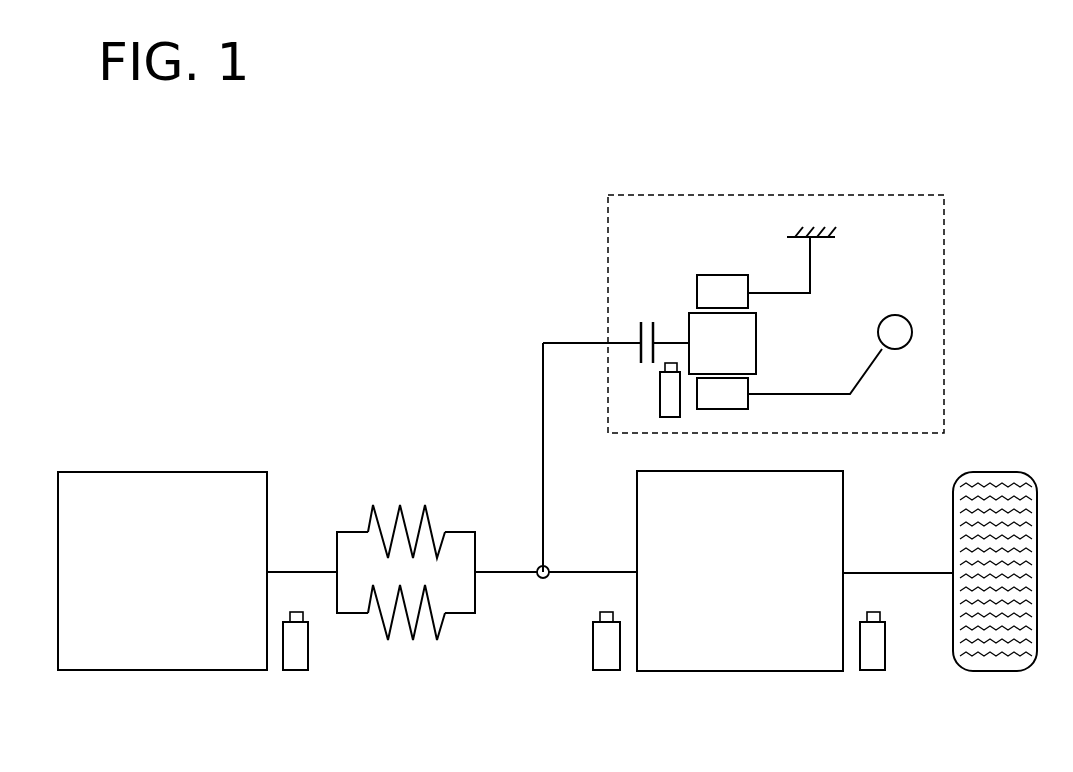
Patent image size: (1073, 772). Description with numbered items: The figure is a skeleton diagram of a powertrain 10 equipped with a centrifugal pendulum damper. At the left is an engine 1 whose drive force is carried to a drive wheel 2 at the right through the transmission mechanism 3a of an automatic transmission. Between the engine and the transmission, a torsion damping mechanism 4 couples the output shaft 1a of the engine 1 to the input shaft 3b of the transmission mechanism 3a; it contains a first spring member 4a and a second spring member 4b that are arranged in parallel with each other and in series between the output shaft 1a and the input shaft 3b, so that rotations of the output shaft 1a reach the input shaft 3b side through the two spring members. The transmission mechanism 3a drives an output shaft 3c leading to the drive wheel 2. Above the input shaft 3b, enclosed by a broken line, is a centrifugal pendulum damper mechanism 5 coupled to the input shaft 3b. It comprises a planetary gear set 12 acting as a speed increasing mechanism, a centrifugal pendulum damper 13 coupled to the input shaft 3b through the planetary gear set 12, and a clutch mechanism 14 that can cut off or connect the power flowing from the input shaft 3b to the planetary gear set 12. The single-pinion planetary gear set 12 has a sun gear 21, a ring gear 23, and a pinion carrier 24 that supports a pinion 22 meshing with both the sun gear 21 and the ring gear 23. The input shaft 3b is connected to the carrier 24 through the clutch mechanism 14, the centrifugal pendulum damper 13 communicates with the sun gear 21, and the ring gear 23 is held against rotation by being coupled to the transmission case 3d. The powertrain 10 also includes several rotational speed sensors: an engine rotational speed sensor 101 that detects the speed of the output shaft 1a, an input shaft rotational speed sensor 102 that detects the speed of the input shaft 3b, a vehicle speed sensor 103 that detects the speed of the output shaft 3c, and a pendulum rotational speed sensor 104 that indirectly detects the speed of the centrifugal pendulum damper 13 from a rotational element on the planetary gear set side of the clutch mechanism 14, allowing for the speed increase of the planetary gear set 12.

The engine 1 is at (217, 471).
The output shaft 1a is at (296, 570).
The drive wheel 2 is at (1016, 472).
The transmission mechanism 3a is at (845, 472).
The input shaft 3b is at (590, 571).
The output shaft 3c is at (896, 572).
The transmission case 3d is at (822, 232).
The torsion damping mechanism 4 is at (437, 573).
The first spring member 4a is at (373, 505).
The second spring member 4b is at (387, 644).
The centrifugal pendulum damper mechanism 5 is at (905, 194).
The powertrain 10 is at (285, 305).
The planetary gear set 12 is at (747, 314).
The centrifugal pendulum damper 13 is at (869, 366).
The clutch mechanism 14 is at (643, 322).
The sun gear 21 is at (749, 406).
The pinion 22 is at (757, 341).
The ring gear 23 is at (748, 292).
The pinion carrier 24 is at (668, 343).
The engine rotational speed sensor 101 is at (297, 672).
The input shaft rotational speed sensor 102 is at (607, 672).
The vehicle speed sensor 103 is at (876, 672).
The pendulum rotational speed sensor 104 is at (681, 412).